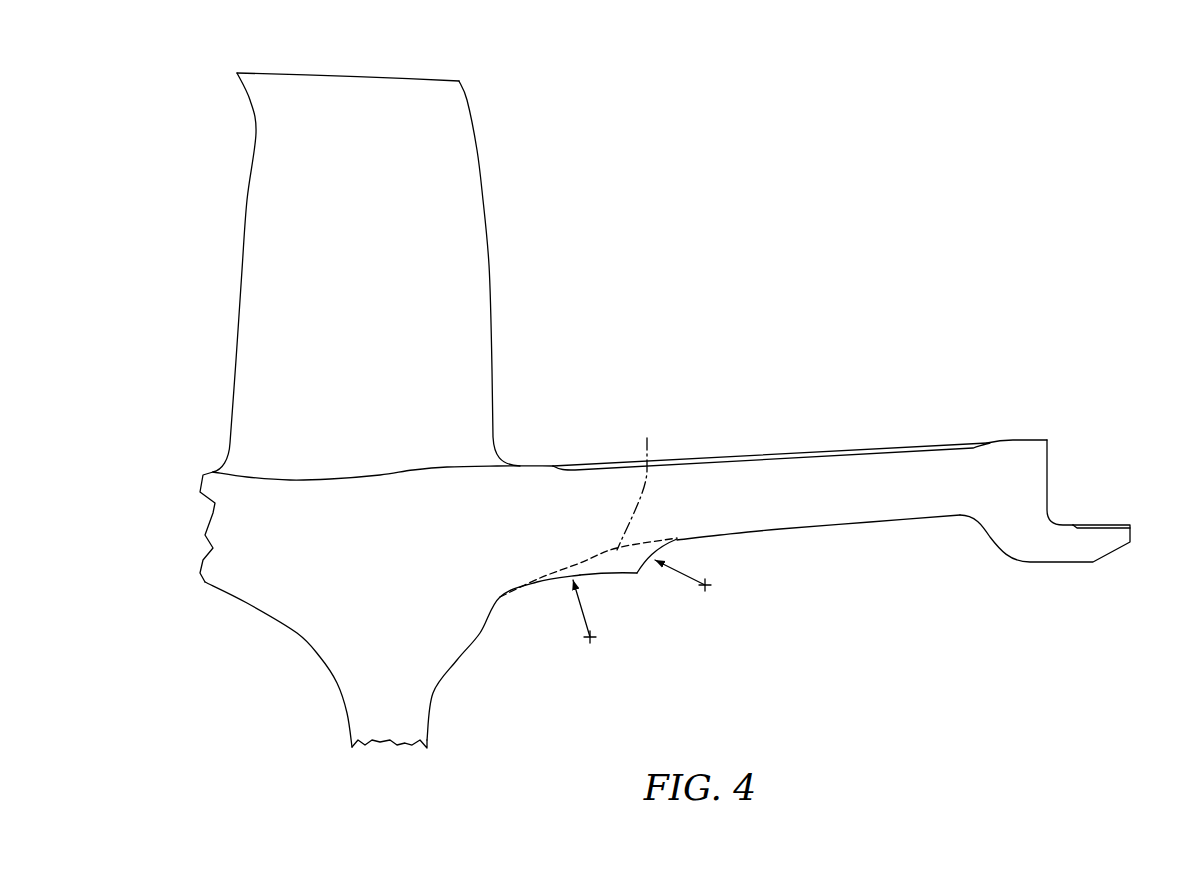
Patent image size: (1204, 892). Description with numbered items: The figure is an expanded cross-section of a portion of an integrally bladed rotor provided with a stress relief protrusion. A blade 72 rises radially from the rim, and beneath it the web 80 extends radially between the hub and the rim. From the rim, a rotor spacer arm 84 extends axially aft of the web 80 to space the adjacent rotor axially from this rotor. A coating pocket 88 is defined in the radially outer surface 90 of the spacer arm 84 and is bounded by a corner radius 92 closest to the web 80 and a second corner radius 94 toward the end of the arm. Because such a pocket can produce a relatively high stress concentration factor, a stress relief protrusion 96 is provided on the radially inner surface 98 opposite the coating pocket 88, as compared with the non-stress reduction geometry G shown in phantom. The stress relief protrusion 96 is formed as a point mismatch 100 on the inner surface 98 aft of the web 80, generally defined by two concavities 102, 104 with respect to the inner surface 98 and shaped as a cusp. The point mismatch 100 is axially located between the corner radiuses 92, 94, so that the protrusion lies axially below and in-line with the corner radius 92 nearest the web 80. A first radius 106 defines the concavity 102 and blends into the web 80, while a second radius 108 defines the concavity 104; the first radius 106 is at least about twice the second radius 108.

The blade 72 is at (371, 279).
The web 80 is at (368, 713).
The rotor spacer arm 84 is at (1090, 482).
The coating pocket 88 is at (830, 462).
The radially outer surface 90 is at (1023, 437).
The corner radius 92 is at (573, 460).
The corner radius 94 is at (983, 437).
The stress relief protrusion 96 is at (622, 563).
The radially inner surface 98 is at (782, 530).
The point mismatch 100 is at (647, 583).
The concavity 102 is at (580, 576).
The concavity 104 is at (467, 524).
The first radius 106 is at (590, 645).
The second radius 108 is at (708, 590).
The non-stress reduction geometry G is at (636, 480).